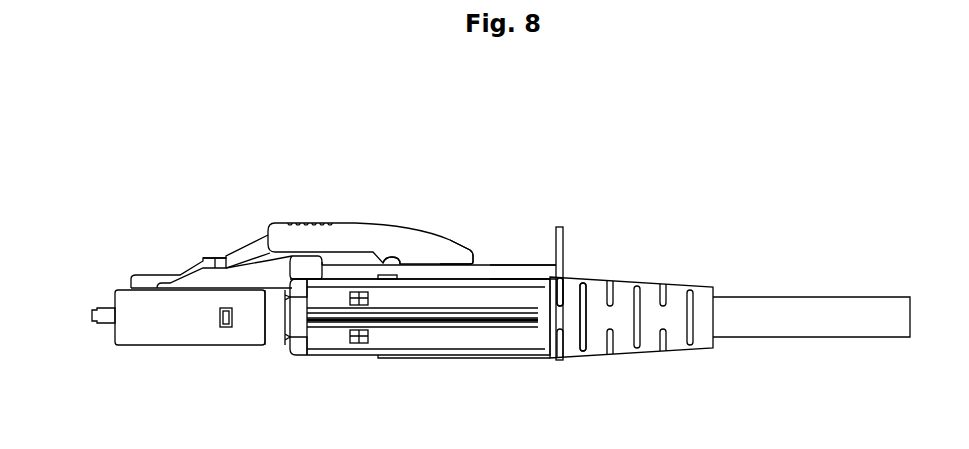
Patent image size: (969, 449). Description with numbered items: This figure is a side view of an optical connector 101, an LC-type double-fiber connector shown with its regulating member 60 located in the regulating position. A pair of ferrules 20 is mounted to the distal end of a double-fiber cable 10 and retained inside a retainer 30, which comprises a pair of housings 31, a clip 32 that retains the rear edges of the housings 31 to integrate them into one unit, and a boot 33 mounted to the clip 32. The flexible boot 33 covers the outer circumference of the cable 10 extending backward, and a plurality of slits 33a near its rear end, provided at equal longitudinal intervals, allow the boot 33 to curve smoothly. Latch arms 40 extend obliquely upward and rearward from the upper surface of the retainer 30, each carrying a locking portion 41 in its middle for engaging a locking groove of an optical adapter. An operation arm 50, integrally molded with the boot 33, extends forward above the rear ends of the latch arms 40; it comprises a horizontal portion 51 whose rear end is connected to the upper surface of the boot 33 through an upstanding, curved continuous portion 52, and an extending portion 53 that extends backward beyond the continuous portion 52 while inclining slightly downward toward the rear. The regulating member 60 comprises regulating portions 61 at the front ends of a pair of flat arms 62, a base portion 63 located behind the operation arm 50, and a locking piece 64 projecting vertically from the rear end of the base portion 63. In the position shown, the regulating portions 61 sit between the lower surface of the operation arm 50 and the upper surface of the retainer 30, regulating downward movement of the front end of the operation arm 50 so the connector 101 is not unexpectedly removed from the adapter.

The optical connector 101 is at (449, 177).
The double-fiber cable 10 is at (808, 338).
The ferrule 20 is at (102, 306).
The retainer 30 is at (273, 347).
The housing 31 is at (179, 348).
The clip 32 is at (298, 357).
The boot 33 is at (442, 342).
The slit 33a is at (576, 283).
The latch arm 40 is at (186, 272).
The locking portion 41 is at (229, 255).
The operation arm 50 is at (370, 224).
The horizontal portion 51 is at (320, 233).
The continuous portion 52 is at (401, 257).
The extending portion 53 is at (455, 250).
The regulating member 60 is at (488, 264).
The regulating portion 61 is at (293, 267).
The arm 62 is at (345, 272).
The base portion 63 is at (528, 267).
The locking piece 64 is at (577, 305).